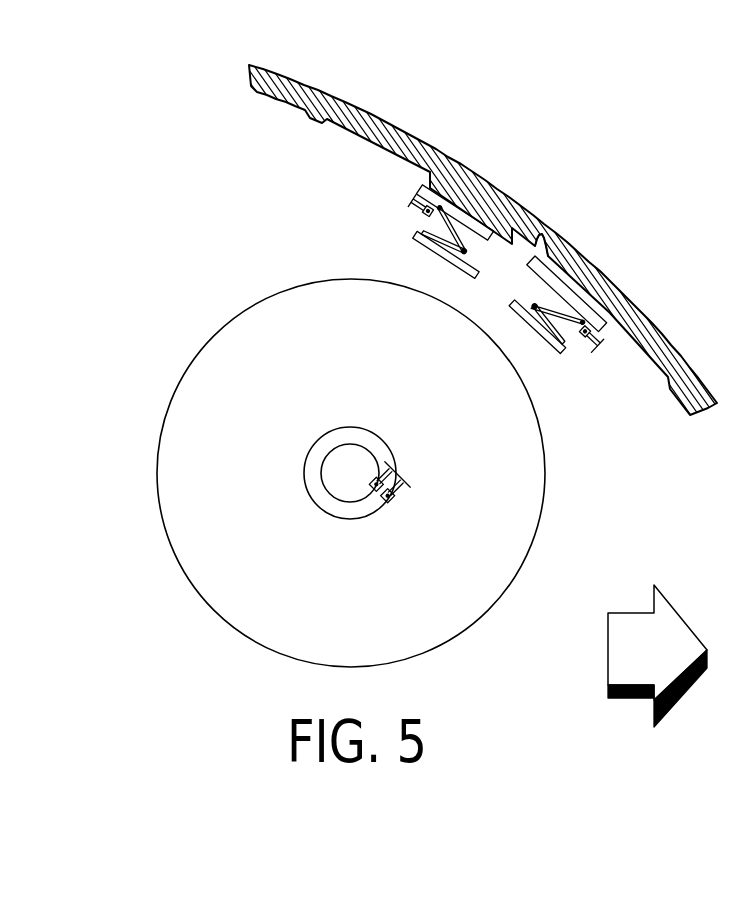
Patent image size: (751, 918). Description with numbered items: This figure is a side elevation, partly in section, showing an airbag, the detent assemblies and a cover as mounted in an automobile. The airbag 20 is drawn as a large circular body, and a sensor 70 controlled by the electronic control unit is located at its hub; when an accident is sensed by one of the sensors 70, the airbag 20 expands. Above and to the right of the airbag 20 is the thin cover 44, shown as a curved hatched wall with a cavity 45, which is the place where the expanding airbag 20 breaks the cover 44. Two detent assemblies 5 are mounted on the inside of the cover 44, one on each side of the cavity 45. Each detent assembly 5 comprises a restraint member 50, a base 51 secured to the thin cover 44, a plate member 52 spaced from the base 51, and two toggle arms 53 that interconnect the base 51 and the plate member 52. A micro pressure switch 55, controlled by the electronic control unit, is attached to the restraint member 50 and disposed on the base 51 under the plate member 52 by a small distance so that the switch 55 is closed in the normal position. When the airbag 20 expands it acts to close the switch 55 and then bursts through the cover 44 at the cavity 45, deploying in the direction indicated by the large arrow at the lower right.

The detent assembly 5 is at (604, 381).
The airbag 20 is at (245, 360).
The thin cover 44 is at (625, 294).
The cavity 45 is at (551, 232).
The restraint member 50 is at (395, 204).
The base 51 is at (441, 208).
The plate member 52 is at (417, 240).
The toggle arms 53 is at (463, 211).
The micro pressure switch 55 is at (530, 209).
The sensors 70 is at (338, 477).